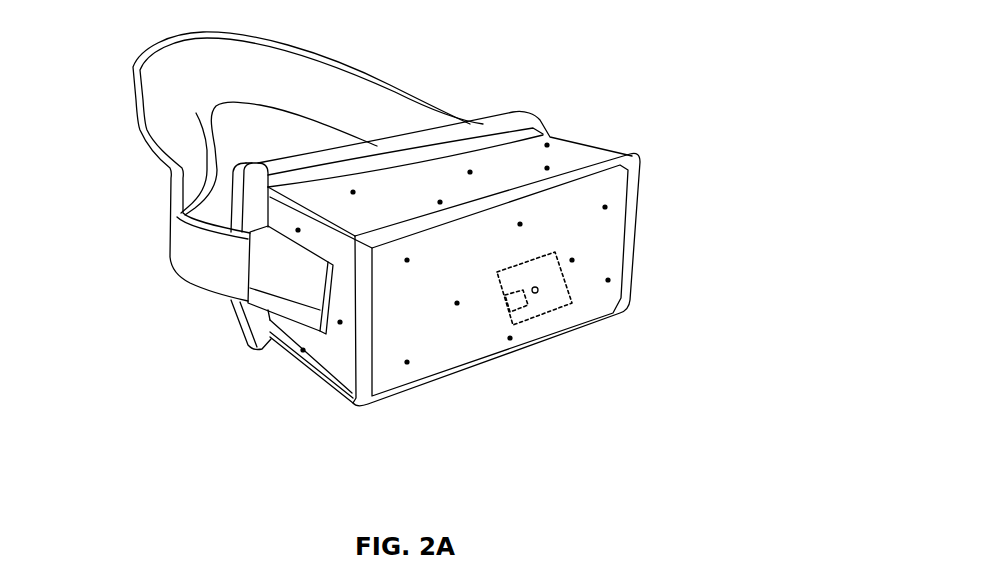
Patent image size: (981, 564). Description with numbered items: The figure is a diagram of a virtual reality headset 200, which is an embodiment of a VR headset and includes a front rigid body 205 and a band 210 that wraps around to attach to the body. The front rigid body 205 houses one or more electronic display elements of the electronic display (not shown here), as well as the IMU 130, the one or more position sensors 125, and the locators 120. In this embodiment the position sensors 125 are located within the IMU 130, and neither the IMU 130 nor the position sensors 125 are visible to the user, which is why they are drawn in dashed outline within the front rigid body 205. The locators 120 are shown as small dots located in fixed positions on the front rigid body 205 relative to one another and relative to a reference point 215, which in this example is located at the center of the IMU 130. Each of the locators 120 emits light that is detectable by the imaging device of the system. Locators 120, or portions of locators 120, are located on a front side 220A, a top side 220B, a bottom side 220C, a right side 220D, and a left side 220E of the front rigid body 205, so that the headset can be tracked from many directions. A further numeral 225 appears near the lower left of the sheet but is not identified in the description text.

The VR headset 200 is at (32, 31).
The reference numeral 225 is at (93, 544).
The band 210 is at (386, 80).
The front rigid body 205 is at (633, 148).
The front side 220A is at (397, 386).
The top side 220B is at (326, 192).
The bottom side 220C is at (298, 385).
The right side 220D is at (333, 355).
The left side 220E is at (615, 138).
The locators 120 is at (620, 270).
The position sensors 125 is at (508, 318).
The IMU 130 is at (584, 305).
The reference point 215 is at (539, 307).